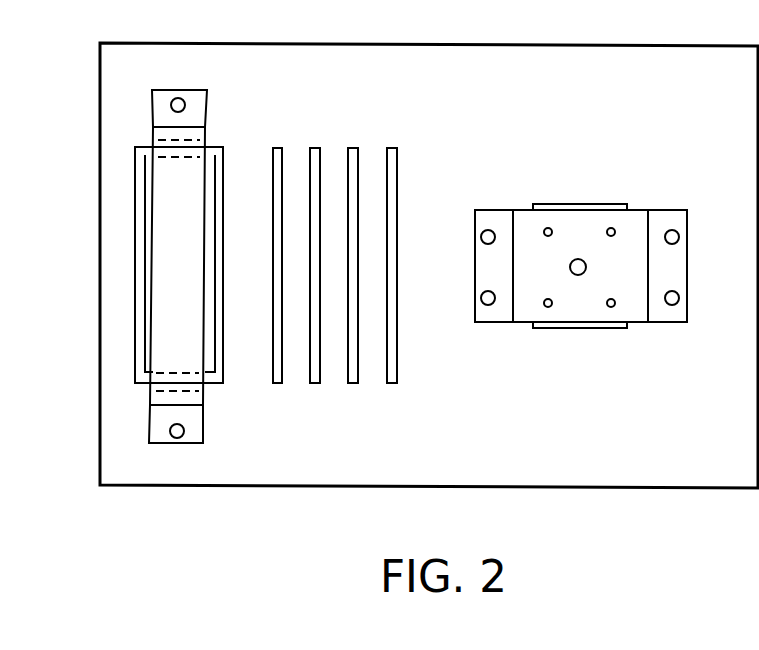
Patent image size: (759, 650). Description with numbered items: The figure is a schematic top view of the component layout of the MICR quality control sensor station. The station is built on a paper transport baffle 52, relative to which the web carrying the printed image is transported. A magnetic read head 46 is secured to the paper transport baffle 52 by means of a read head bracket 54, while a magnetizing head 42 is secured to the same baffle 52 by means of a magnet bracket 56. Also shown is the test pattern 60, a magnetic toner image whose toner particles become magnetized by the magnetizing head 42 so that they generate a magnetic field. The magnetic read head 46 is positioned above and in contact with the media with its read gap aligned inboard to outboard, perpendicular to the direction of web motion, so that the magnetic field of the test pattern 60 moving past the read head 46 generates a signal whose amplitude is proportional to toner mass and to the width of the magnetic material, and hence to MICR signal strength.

The magnetizing head 42 is at (135, 274).
The magnetic read head 46 is at (585, 204).
The paper transport baffle 52 is at (392, 503).
The read head bracket 54 is at (697, 331).
The magnet bracket 56 is at (203, 422).
The test pattern 60 is at (400, 400).